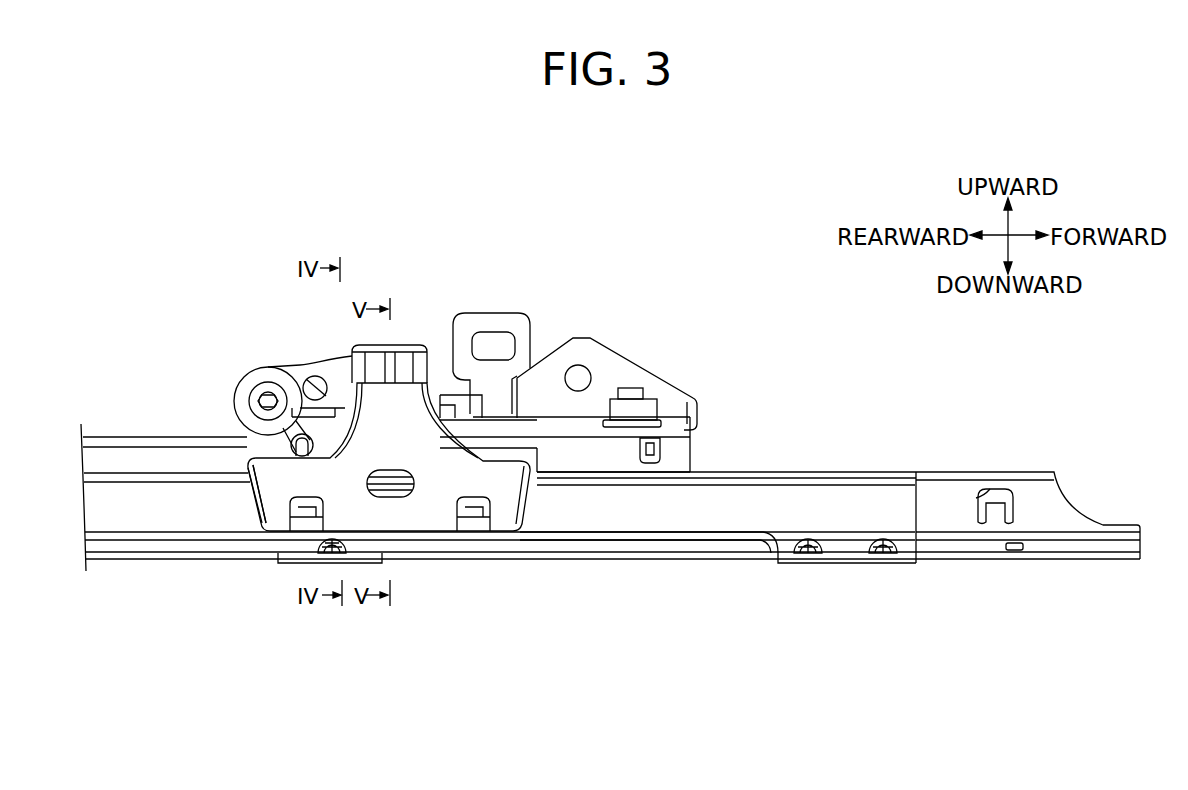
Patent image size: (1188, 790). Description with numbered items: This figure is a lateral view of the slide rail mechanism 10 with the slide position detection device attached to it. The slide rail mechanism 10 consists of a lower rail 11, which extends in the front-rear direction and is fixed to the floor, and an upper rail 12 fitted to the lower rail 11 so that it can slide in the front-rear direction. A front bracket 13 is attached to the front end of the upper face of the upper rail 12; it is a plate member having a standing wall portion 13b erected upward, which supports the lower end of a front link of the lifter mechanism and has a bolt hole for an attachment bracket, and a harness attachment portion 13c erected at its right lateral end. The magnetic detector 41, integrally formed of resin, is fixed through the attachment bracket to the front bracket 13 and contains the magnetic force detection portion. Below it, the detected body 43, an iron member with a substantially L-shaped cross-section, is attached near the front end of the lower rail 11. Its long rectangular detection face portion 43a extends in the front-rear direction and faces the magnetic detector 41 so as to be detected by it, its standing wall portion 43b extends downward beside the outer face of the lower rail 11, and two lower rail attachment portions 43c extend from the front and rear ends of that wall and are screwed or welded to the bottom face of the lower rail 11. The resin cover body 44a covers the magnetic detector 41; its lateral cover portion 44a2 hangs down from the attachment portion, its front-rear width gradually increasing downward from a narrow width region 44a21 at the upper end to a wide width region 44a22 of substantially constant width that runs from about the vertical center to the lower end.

The slide rail mechanism 10 is at (895, 402).
The lower rail 11 is at (990, 559).
The upper rail 12 is at (135, 436).
The front bracket 13 is at (643, 367).
The standing wall portion 13b is at (585, 338).
The harness attachment portion 13c is at (490, 312).
The magnetic detector 41 is at (337, 412).
The detected body 43 is at (718, 513).
The detection face portion 43a is at (790, 472).
The standing wall portion 43b is at (683, 514).
The lower rail attachment portion 43c is at (292, 565).
The cover body 44a is at (365, 452).
The lateral cover portion 44a2 is at (273, 478).
The narrow width region 44a21 is at (348, 377).
The wide width region 44a22 is at (252, 497).